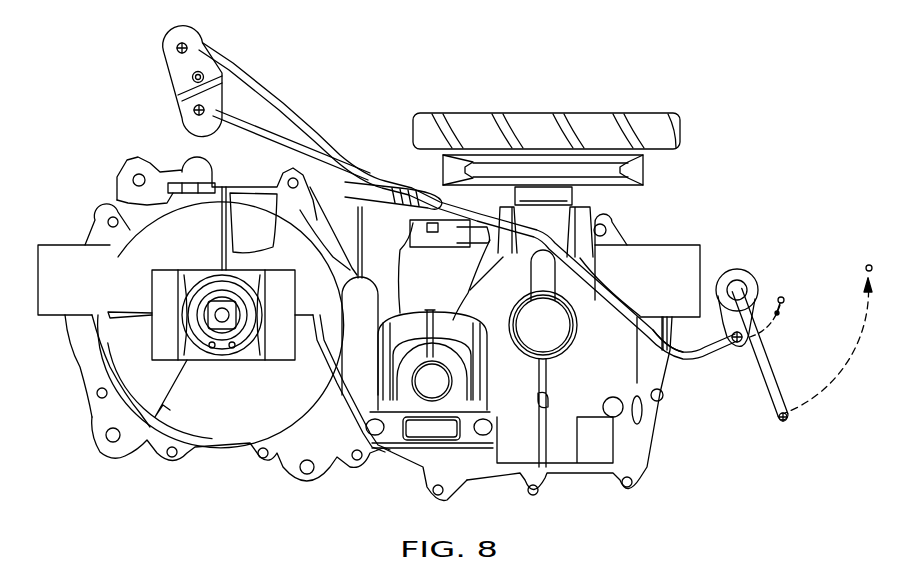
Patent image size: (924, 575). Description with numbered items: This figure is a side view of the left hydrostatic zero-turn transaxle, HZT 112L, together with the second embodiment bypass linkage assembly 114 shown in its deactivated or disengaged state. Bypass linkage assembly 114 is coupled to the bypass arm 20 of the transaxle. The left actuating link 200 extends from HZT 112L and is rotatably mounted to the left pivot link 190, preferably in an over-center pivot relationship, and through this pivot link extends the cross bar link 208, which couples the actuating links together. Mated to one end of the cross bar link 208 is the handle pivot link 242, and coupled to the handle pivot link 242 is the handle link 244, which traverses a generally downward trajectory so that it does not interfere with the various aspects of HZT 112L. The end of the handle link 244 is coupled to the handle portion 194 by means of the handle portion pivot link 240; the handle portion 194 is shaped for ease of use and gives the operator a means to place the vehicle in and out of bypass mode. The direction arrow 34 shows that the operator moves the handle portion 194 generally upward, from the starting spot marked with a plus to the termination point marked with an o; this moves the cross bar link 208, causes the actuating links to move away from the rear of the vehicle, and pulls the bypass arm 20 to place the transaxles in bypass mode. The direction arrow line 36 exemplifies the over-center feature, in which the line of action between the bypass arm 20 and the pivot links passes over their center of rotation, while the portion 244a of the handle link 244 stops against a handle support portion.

The bypass linkage assembly 114 is at (305, 86).
The HZT 112L is at (740, 99).
The bypass arm 20 is at (383, 212).
The handle pivot link 242 is at (167, 37).
The left pivot link 190 is at (187, 125).
The cross bar link 208 is at (190, 77).
The handle link 244 is at (243, 72).
The left actuating link 200 is at (221, 126).
The portion of handle link 244a is at (703, 352).
The handle portion pivot link 240 is at (752, 280).
The handle portion 194 is at (770, 404).
The direction arrow line 36 is at (776, 329).
The direction arrow 34 is at (826, 396).